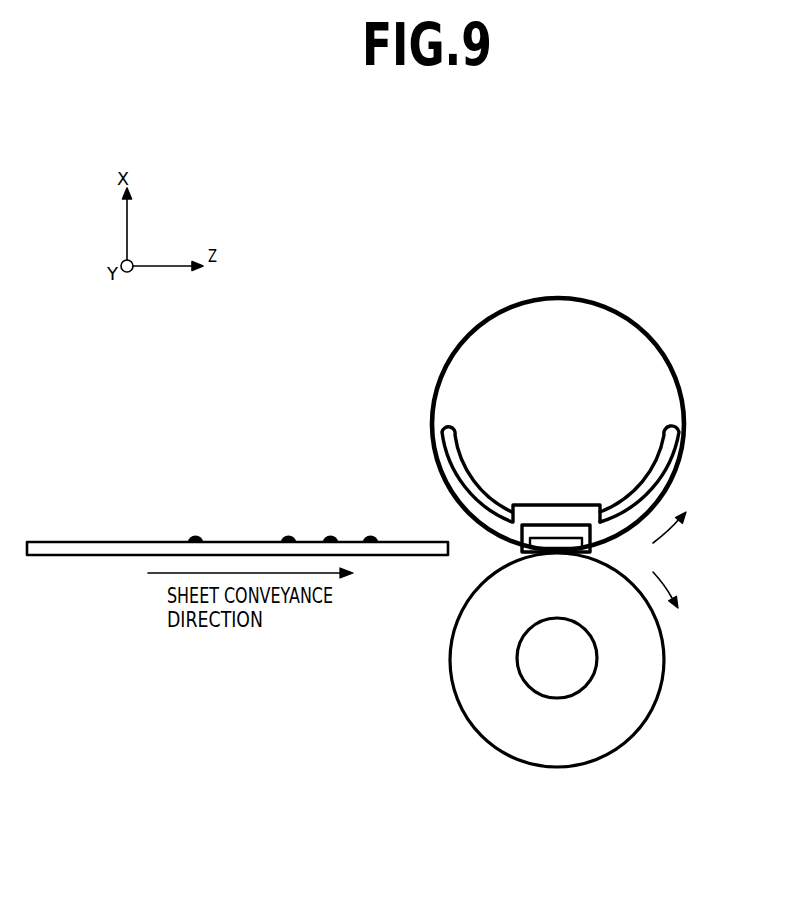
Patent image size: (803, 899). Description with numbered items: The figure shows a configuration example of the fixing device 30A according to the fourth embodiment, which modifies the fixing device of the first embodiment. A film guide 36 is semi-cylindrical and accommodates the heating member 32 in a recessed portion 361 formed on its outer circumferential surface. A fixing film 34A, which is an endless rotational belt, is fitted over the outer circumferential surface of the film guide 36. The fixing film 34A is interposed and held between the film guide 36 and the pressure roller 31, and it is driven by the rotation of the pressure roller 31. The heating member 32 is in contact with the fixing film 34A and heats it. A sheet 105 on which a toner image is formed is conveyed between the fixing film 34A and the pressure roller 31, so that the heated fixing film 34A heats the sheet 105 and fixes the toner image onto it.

The fixing device 30A is at (702, 279).
The fixing film 34A is at (673, 372).
The film guide 36 is at (653, 462).
The recessed portion 361 is at (530, 520).
The heating member 32 is at (557, 538).
The pressure roller 31 is at (660, 637).
The sheet 105 is at (138, 556).